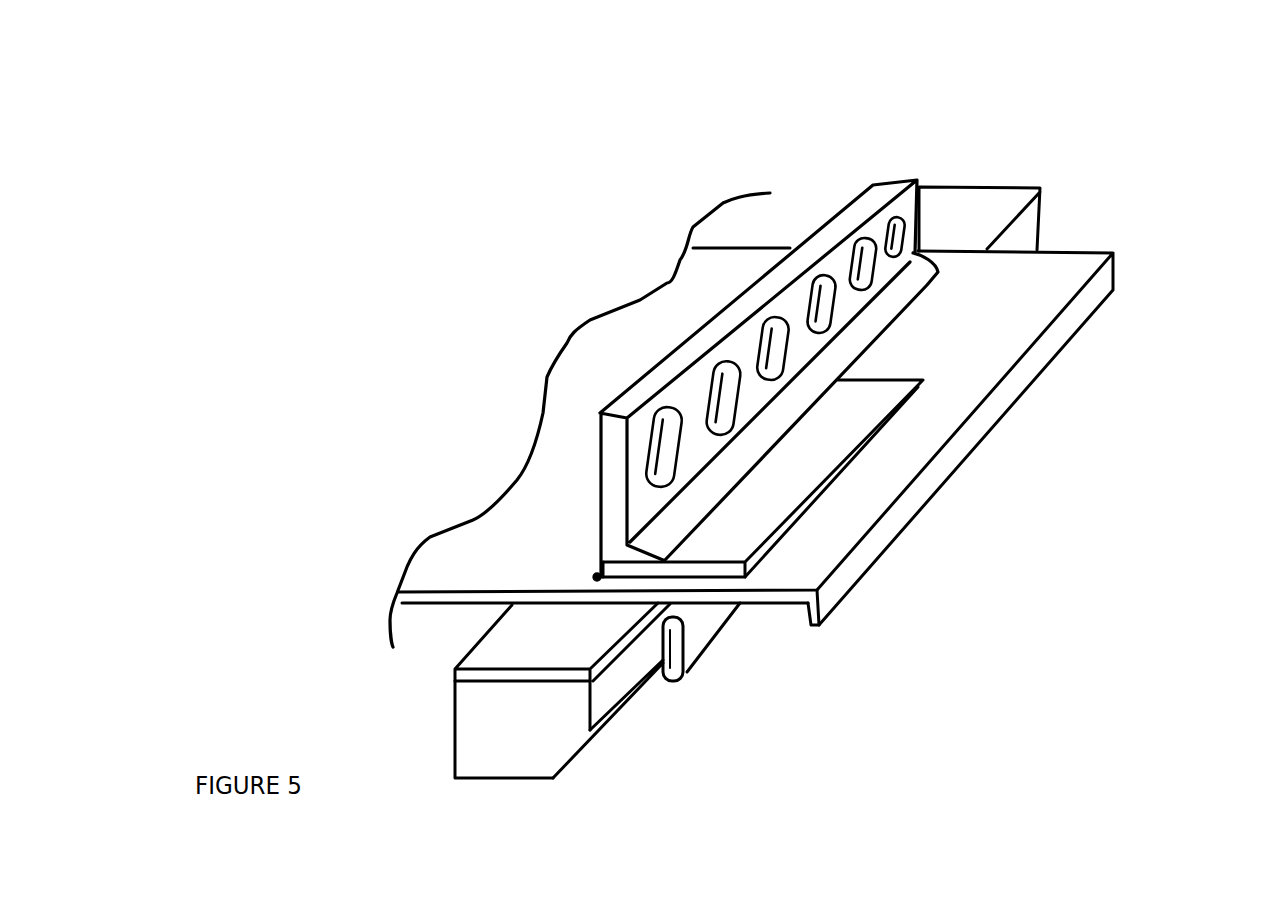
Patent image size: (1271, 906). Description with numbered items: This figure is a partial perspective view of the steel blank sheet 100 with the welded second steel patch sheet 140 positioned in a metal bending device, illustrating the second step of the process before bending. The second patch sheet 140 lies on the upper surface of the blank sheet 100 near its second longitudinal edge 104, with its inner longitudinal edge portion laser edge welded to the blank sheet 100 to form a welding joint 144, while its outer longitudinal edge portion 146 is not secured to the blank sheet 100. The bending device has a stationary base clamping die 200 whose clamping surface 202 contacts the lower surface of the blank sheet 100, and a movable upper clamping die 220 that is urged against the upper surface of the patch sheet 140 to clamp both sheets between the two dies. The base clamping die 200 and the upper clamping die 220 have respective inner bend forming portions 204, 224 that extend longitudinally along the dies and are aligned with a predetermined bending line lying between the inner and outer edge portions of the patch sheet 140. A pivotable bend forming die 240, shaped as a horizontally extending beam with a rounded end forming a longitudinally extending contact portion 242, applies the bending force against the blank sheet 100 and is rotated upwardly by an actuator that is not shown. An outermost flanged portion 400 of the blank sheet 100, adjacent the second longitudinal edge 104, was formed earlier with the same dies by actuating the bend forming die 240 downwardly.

The steel blank sheet 100 is at (603, 368).
The second longitudinal edge 104 is at (820, 623).
The second steel patch sheet 140 is at (923, 383).
The welding joint 144 is at (597, 577).
The outer longitudinal edge portion 146 is at (858, 450).
The base clamping die 200 is at (520, 753).
The clamping surface 202 is at (517, 641).
The inner bend forming portion 204 is at (620, 663).
The upper clamping die 220 is at (870, 187).
The inner bend forming portion 224 is at (930, 282).
The bend forming die 240 is at (683, 673).
The contact portion 242 is at (678, 620).
The outermost flanged portion 400 is at (1075, 313).